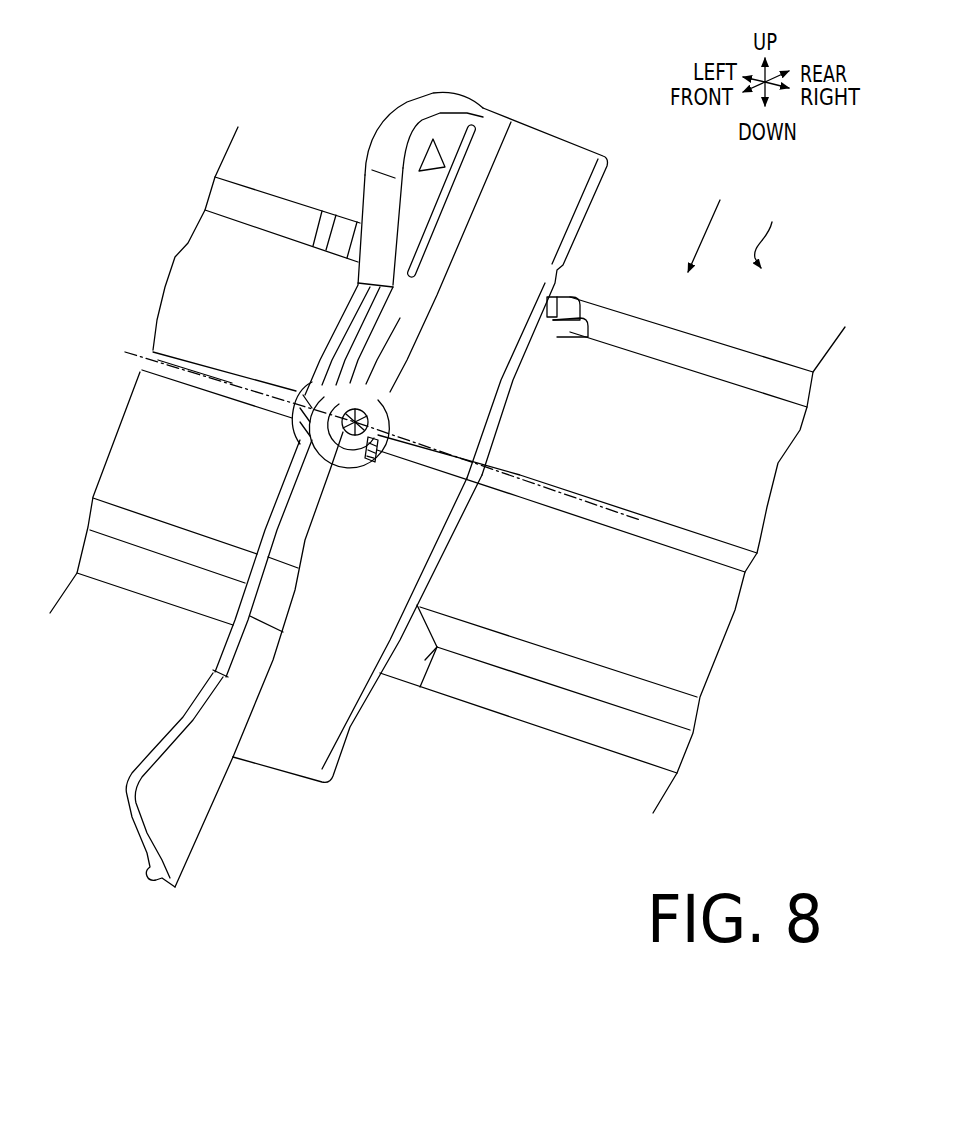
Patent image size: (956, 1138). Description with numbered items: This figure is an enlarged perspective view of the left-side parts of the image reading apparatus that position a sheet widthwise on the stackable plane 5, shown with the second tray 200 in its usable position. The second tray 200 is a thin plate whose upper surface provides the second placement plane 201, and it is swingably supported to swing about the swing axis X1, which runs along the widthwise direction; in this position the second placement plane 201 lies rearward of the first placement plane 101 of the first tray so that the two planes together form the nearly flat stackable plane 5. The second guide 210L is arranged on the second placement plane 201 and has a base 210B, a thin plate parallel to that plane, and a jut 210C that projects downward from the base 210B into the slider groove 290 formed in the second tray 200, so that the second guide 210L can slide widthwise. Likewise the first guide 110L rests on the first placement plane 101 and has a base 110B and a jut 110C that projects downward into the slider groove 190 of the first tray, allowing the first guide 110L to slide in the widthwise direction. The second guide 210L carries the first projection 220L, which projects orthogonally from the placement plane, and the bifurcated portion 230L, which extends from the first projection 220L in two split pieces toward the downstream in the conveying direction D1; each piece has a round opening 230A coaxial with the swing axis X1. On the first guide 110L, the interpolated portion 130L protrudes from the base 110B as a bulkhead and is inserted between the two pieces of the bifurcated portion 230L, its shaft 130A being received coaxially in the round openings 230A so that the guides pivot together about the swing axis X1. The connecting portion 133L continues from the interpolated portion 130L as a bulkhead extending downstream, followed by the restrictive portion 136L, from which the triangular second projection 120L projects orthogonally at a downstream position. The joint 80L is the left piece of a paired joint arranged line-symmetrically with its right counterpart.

The first projection 220L is at (390, 143).
The second guide 210L is at (486, 102).
The base 210B is at (492, 357).
The jut 210C is at (573, 337).
The shaft 130A is at (393, 340).
The interpolated portion 130L is at (293, 410).
The bifurcated portion 230L is at (378, 394).
The round opening 230A is at (353, 445).
The joint 80L is at (290, 381).
The swing axis X1 is at (366, 427).
The slider groove 290 is at (723, 348).
The second placement plane 201 is at (655, 448).
The second tray 200 is at (784, 466).
The first placement plane 101 is at (593, 600).
The slider groove 190 is at (617, 752).
The first guide 110L is at (269, 770).
The base 110B is at (367, 623).
The jut 110C is at (420, 665).
The connecting portion 133L is at (273, 600).
The restrictive portion 136L is at (250, 661).
The second projection 120L is at (145, 787).
The conveying direction D1 is at (700, 234).
The stackable plane 5 is at (767, 233).